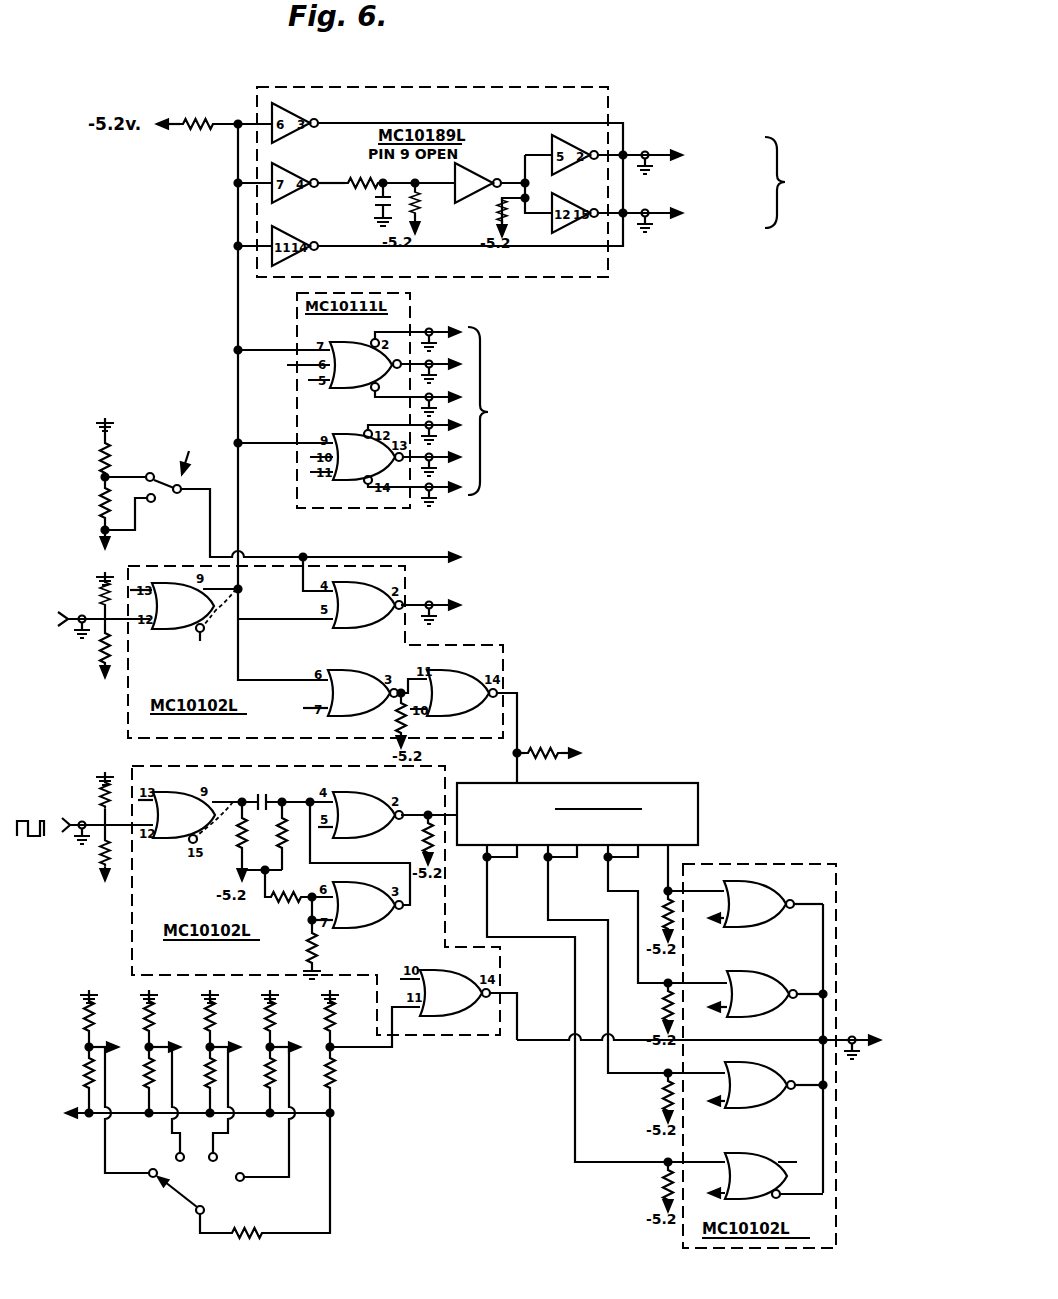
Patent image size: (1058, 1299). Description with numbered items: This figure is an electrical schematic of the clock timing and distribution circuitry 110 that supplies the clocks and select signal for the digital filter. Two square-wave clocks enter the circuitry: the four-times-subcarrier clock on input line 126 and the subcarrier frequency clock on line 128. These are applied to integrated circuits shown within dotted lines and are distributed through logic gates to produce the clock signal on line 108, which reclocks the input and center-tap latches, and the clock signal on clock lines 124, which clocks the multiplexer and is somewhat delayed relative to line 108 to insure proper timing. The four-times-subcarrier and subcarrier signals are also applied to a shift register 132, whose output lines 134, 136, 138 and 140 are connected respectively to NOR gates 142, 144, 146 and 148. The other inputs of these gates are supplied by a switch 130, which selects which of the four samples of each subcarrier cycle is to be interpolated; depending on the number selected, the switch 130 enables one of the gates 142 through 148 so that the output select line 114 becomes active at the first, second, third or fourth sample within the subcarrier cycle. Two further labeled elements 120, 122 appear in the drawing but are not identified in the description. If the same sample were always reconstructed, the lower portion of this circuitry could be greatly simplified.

The clock line 108 is at (481, 416).
The clock timing and distribution circuitry 110 is at (700, 706).
The select line 114 is at (856, 1033).
The reset control output 120 is at (440, 556).
The number of terms switch 122 is at (181, 486).
The clock lines 124 is at (672, 162).
The input line 126 is at (71, 626).
The subcarrier frequency clock line 128 is at (89, 821).
The switch 130 is at (172, 1208).
The shift register 132 is at (699, 781).
The output line 134 is at (488, 893).
The output line 136 is at (549, 883).
The output line 138 is at (609, 873).
The output line 140 is at (680, 858).
The NOR gate 142 is at (762, 1154).
The NOR gate 144 is at (767, 1064).
The NOR gate 146 is at (758, 972).
The NOR gate 148 is at (765, 882).